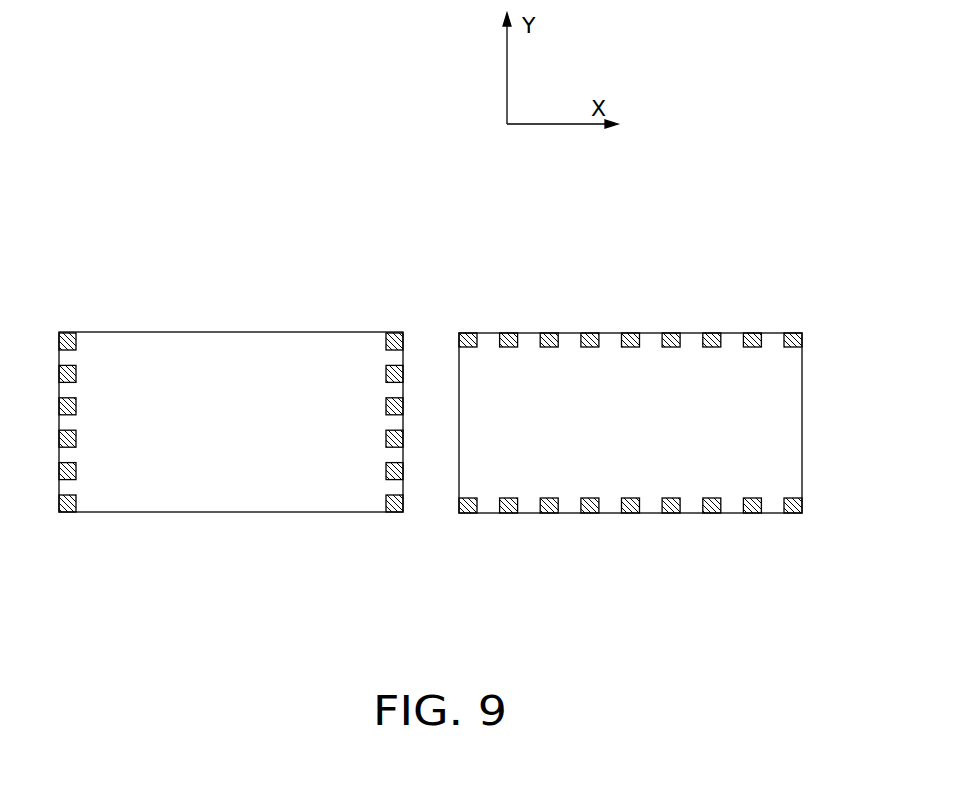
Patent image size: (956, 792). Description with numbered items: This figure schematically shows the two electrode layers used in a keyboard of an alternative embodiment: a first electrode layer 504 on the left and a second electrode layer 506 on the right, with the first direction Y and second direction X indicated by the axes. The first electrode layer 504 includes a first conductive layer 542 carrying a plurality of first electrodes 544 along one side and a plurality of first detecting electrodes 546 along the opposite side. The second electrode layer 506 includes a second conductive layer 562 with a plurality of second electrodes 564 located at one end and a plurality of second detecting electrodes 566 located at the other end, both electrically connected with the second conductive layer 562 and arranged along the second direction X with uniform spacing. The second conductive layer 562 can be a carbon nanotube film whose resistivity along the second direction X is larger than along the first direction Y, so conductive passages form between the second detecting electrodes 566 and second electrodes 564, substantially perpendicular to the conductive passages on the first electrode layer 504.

The first electrode layer 504 is at (252, 369).
The first conductive layer 542 is at (270, 332).
The first electrode 544 is at (65, 333).
The first detecting electrode 546 is at (390, 333).
The second electrode layer 506 is at (648, 438).
The second conductive layer 562 is at (802, 455).
The second electrode 564 is at (752, 338).
The second detecting electrode 566 is at (593, 510).